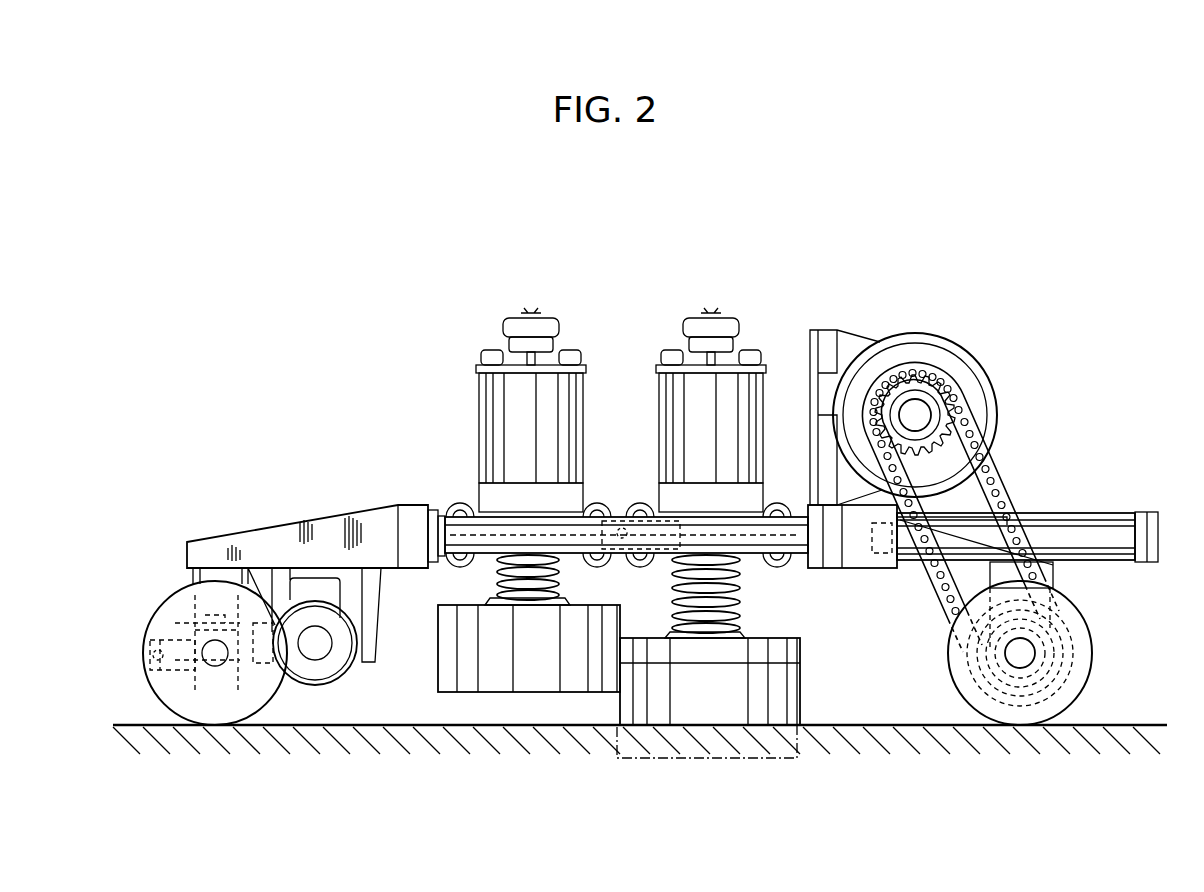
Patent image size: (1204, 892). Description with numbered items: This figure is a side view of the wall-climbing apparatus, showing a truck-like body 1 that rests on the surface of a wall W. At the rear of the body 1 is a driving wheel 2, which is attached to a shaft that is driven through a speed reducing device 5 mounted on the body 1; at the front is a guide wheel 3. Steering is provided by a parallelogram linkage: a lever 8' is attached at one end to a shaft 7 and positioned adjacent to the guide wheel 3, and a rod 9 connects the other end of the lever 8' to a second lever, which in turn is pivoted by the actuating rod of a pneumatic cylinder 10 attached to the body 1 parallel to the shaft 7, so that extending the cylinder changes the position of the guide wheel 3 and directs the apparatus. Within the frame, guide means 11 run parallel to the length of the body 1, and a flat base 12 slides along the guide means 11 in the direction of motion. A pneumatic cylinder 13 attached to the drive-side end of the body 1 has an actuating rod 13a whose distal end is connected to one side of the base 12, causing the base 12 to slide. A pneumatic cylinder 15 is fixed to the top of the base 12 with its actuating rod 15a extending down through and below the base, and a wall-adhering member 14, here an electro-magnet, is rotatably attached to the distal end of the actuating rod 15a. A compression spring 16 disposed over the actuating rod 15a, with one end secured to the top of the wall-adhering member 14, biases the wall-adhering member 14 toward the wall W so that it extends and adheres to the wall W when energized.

The truck-like body 1 is at (307, 508).
The driving wheel 2 is at (1044, 643).
The guide wheel 3 is at (215, 683).
The speed reducing device 5 is at (925, 411).
The shaft 7 is at (213, 713).
The lever 8' is at (205, 624).
The rod 9 is at (158, 634).
The pneumatic cylinder 10 is at (315, 693).
The guide means 11 is at (626, 496).
The flat base 12 is at (443, 570).
The pneumatic cylinder 13 is at (1027, 498).
The actuating rod 13a is at (930, 556).
The wall-adhering member 14 is at (675, 697).
The pneumatic cylinder 15 is at (629, 404).
The actuating rod 15a is at (800, 630).
The compression spring 16 is at (645, 594).
The wall W is at (640, 717).